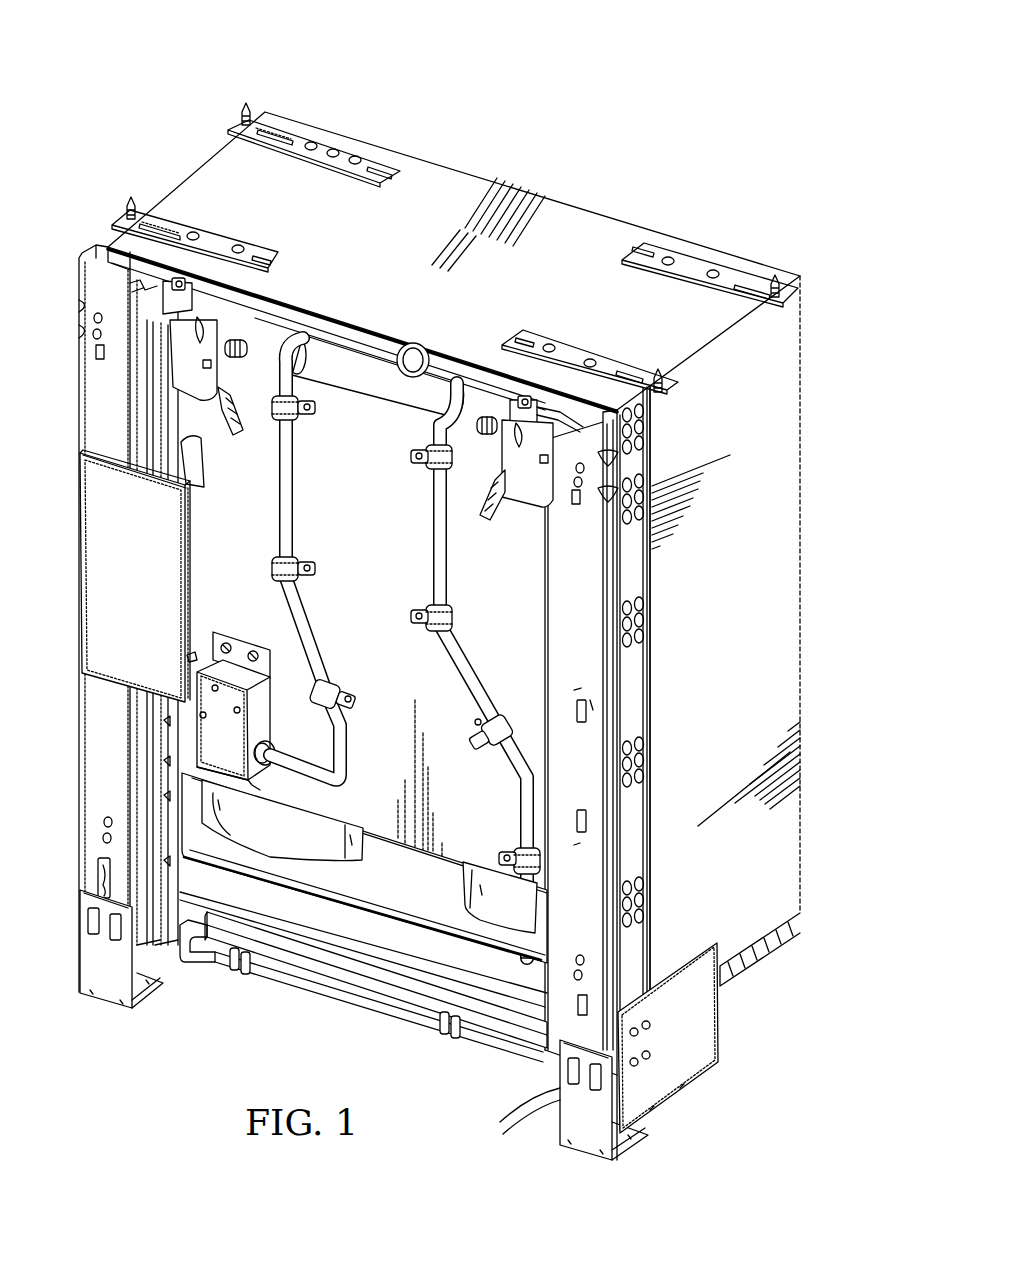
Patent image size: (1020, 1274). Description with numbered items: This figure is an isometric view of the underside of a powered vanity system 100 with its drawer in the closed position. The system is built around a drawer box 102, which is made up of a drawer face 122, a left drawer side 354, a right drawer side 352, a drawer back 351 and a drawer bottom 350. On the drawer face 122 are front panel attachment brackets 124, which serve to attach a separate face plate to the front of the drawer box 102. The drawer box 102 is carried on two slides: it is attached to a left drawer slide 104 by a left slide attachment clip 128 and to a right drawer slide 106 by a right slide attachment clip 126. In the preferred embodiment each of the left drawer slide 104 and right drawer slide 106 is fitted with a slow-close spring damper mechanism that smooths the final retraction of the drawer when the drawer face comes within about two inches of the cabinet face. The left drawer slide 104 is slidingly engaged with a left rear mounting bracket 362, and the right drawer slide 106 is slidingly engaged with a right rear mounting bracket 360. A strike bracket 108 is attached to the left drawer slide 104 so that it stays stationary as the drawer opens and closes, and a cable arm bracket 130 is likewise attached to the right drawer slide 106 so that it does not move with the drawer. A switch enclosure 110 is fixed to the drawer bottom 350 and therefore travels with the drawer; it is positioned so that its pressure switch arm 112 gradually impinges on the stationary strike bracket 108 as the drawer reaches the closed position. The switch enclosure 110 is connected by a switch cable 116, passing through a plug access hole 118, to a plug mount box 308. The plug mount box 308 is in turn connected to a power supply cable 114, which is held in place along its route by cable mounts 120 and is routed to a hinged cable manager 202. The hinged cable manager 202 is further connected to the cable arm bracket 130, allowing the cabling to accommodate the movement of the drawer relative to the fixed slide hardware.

The powered vanity system 100 is at (146, 60).
The drawer box 102 is at (855, 430).
The left drawer slide 104 is at (79, 830).
The right drawer slide 106 is at (593, 948).
The strike bracket 108 is at (80, 565).
The switch enclosure 110 is at (200, 746).
The pressure switch arm 112 is at (197, 650).
The power supply cable 114 is at (448, 565).
The switch cable 116 is at (278, 470).
The plug access hole 118 is at (398, 352).
The cable mounts 120 is at (447, 615).
The drawer face 122 is at (456, 170).
The front panel attachment brackets 124 is at (300, 130).
The right slide attachment clip 126 is at (523, 455).
The left slide attachment clip 128 is at (190, 357).
The cable arm bracket 130 is at (722, 1017).
The hinged cable manager 202 is at (440, 1030).
The plug mount box 308 is at (347, 357).
The drawer bottom 350 is at (376, 564).
The drawer back 351 is at (190, 927).
The right drawer side 352 is at (795, 598).
The left drawer side 354 is at (188, 180).
The right rear mounting bracket 360 is at (585, 1155).
The left rear mounting bracket 362 is at (108, 1000).